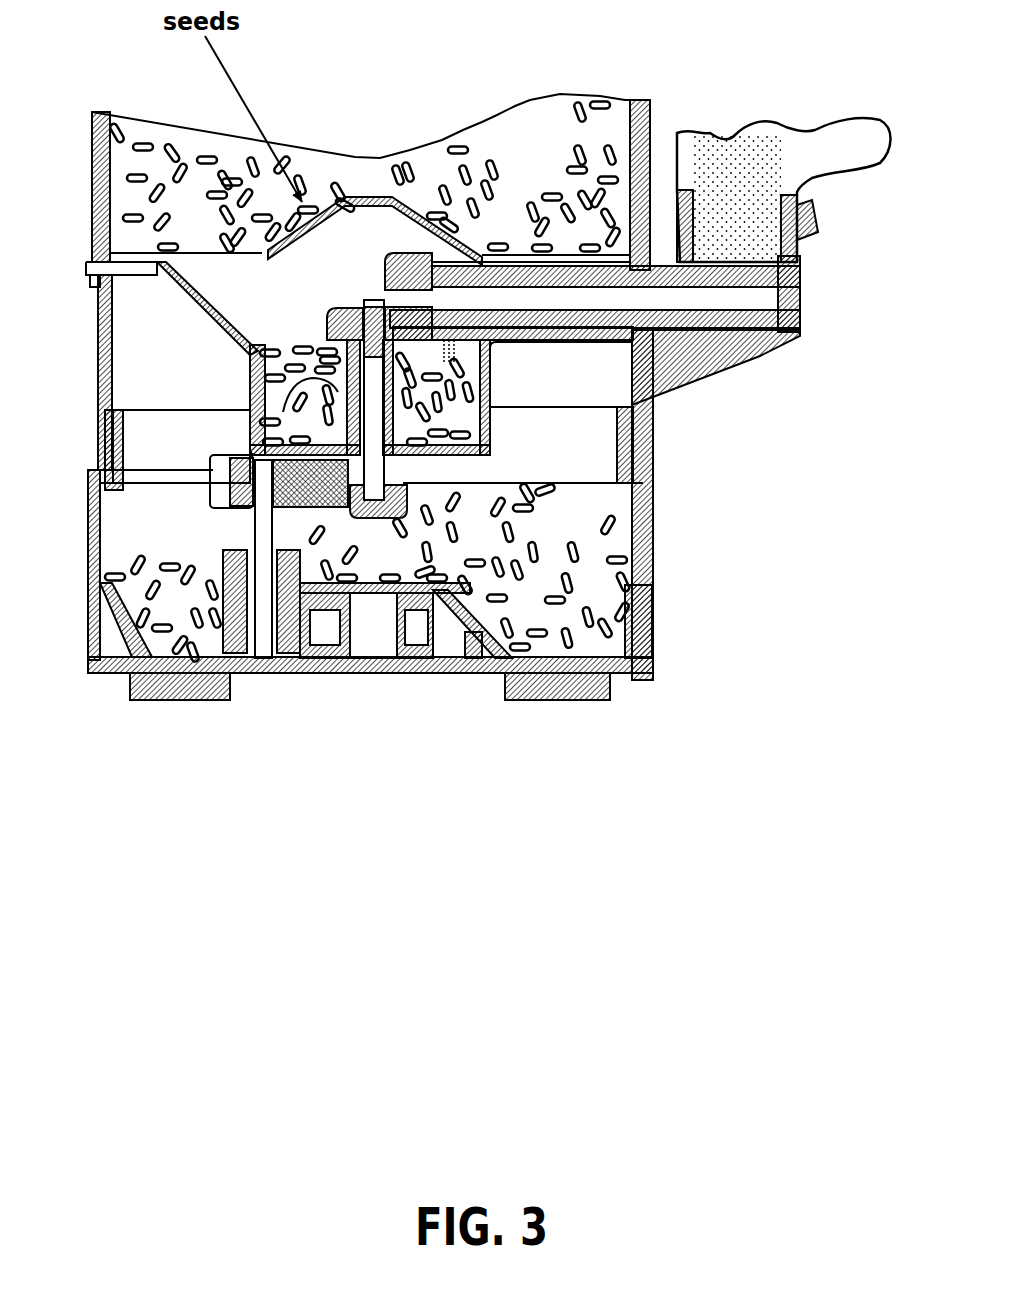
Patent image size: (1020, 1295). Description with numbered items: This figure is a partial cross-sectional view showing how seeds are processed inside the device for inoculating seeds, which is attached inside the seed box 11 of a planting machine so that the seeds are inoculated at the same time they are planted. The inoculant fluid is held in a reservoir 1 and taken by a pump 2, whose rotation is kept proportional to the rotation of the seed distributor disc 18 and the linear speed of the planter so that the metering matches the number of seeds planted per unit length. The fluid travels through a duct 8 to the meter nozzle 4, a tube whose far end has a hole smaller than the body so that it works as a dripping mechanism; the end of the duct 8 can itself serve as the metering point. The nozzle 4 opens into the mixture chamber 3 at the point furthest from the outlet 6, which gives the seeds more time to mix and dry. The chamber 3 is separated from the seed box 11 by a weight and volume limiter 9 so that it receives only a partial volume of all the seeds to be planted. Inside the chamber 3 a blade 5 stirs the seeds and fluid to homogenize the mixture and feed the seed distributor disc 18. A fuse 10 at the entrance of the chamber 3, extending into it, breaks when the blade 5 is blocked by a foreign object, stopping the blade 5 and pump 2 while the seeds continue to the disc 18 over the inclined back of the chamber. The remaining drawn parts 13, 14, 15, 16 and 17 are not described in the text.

The reservoir 1 is at (768, 150).
The pump 2 is at (804, 300).
The mixture chamber 3 is at (264, 365).
The meter nozzle 4 is at (643, 457).
The blade 5 is at (290, 418).
The outlet 6 is at (495, 423).
The duct 8 is at (642, 338).
The weight and volume limiter 9 is at (417, 207).
The fuse 10 is at (358, 304).
The seed box 11 is at (535, 150).
The gearbox 13 is at (302, 675).
The foot 14 is at (197, 695).
The drive shaft 15 is at (210, 466).
The central shaft 16 is at (382, 300).
The wedge support 17 is at (770, 352).
The seed distributor disc 18 is at (486, 675).